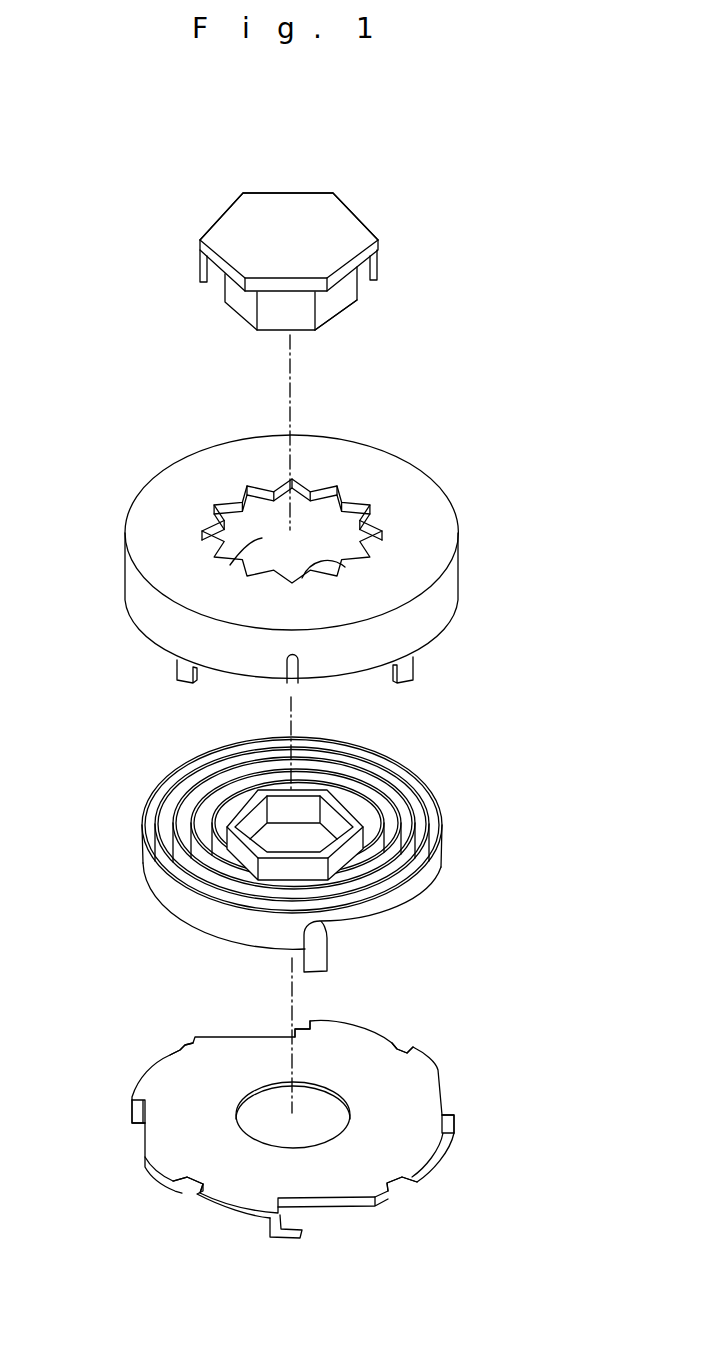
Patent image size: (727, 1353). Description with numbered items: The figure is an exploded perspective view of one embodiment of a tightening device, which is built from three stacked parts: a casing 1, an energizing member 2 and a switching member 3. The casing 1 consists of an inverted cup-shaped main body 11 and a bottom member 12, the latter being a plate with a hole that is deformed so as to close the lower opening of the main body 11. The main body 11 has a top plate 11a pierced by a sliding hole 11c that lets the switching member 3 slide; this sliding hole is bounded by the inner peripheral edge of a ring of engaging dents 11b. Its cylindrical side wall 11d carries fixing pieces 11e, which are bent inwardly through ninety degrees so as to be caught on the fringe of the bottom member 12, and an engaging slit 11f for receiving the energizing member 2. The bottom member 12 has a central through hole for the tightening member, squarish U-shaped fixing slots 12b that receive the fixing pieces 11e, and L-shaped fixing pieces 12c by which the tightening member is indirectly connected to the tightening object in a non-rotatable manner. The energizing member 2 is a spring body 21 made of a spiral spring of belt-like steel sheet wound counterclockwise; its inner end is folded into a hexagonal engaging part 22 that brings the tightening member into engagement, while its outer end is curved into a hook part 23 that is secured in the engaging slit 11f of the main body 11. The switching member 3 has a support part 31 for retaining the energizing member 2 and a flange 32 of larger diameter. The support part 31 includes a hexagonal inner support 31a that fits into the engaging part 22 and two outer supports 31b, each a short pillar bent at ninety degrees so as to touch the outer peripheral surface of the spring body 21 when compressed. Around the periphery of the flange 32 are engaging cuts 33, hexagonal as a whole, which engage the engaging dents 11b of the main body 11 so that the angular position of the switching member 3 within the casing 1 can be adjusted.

The casing 1 is at (298, 562).
The main body 11 is at (295, 562).
The top plate 11a is at (142, 513).
The engaging dents 11b is at (345, 567).
The sliding hole 11c is at (230, 565).
The cylindrical side wall 11d is at (450, 590).
The fixing pieces 11e is at (177, 672).
The engaging slit 11f is at (295, 670).
The bottom member 12 is at (301, 1130).
The fixing slots 12b is at (183, 1047).
The L-shaped fixing pieces 12c is at (300, 1029).
The energizing member 2 is at (327, 857).
The spring body 21 is at (430, 873).
The engaging part 22 is at (237, 845).
The hook part 23 is at (318, 957).
The switching member 3 is at (316, 266).
The support part 31 is at (227, 324).
The hexagonal inner support 31a is at (342, 308).
The outer supports 31b is at (197, 273).
The flange 32 is at (300, 215).
The engaging cuts 33 is at (218, 218).